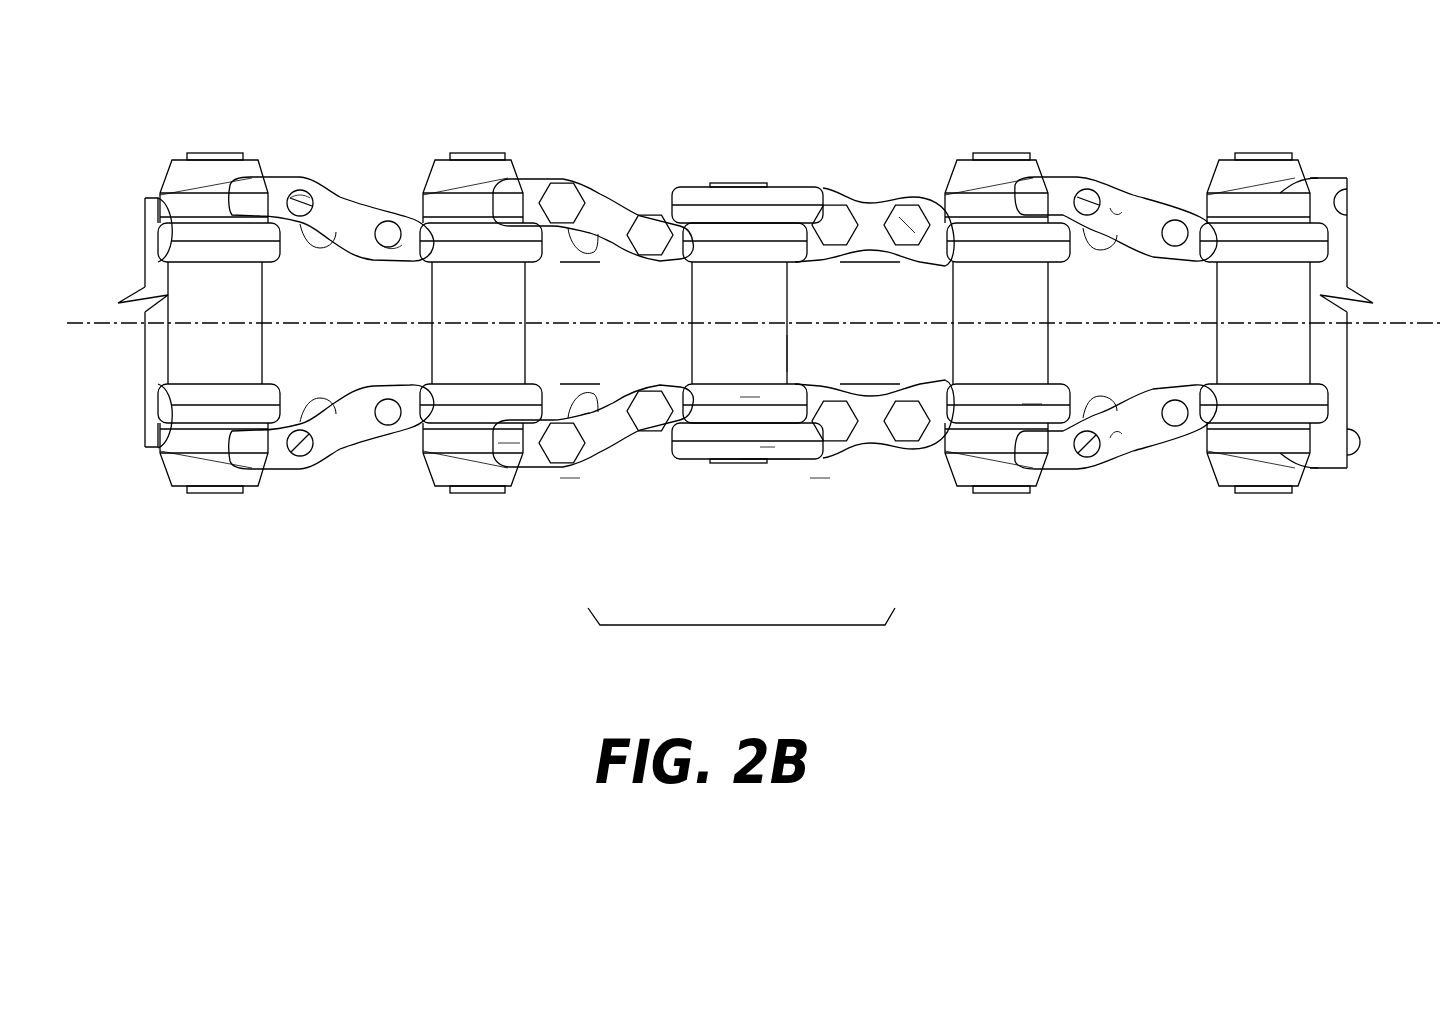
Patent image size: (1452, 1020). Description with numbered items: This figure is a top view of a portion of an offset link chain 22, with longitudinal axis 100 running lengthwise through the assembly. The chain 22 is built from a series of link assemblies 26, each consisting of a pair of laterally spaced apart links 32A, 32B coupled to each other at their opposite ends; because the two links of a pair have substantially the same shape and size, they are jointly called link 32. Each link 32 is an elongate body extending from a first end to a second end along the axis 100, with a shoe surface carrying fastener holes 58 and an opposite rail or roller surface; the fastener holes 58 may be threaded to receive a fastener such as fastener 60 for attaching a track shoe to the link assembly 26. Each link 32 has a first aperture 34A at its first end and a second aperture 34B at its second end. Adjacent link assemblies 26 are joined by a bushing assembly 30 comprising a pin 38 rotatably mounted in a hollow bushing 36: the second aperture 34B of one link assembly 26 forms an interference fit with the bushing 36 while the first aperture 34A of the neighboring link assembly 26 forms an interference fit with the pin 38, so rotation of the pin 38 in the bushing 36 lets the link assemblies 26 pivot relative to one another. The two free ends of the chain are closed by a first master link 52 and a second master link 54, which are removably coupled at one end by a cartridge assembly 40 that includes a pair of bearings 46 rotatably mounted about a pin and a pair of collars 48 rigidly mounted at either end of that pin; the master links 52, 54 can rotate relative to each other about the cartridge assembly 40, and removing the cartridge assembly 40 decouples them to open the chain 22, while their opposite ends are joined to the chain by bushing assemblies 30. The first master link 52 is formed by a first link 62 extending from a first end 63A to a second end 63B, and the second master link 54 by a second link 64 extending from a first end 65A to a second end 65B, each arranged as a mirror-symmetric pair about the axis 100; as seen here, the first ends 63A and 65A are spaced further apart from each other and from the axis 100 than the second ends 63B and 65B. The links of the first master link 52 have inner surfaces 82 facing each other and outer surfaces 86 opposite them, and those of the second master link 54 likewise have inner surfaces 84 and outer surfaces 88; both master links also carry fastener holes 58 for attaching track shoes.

The offset link chain 22 is at (118, 218).
The link assembly 26 is at (742, 627).
The bushing assembly 30 is at (739, 323).
The link 32 is at (402, 85).
The link 32A is at (326, 208).
The link 32B is at (333, 427).
The first aperture 34A is at (208, 502).
The second aperture 34B is at (472, 372).
The bushing 36 is at (423, 278).
The pin 38 is at (480, 495).
The cartridge assembly 40 is at (747, 323).
The bearing 46 is at (787, 333).
The collar 48 is at (750, 467).
The first master link 52 is at (570, 485).
The second master link 54 is at (818, 485).
The fastener hole 58 is at (1113, 205).
The fastener 60 is at (910, 215).
The first link 62 is at (623, 179).
The first end 63A is at (506, 449).
The second end 63B is at (748, 388).
The second link 64 is at (821, 169).
The first end 65A is at (755, 447).
The second end 65B is at (1033, 404).
The inner surface 82 is at (587, 262).
The inner surface 84 is at (860, 262).
The outer surface 86 is at (585, 196).
The outer surface 88 is at (877, 192).
The longitudinal axis 100 is at (1390, 322).